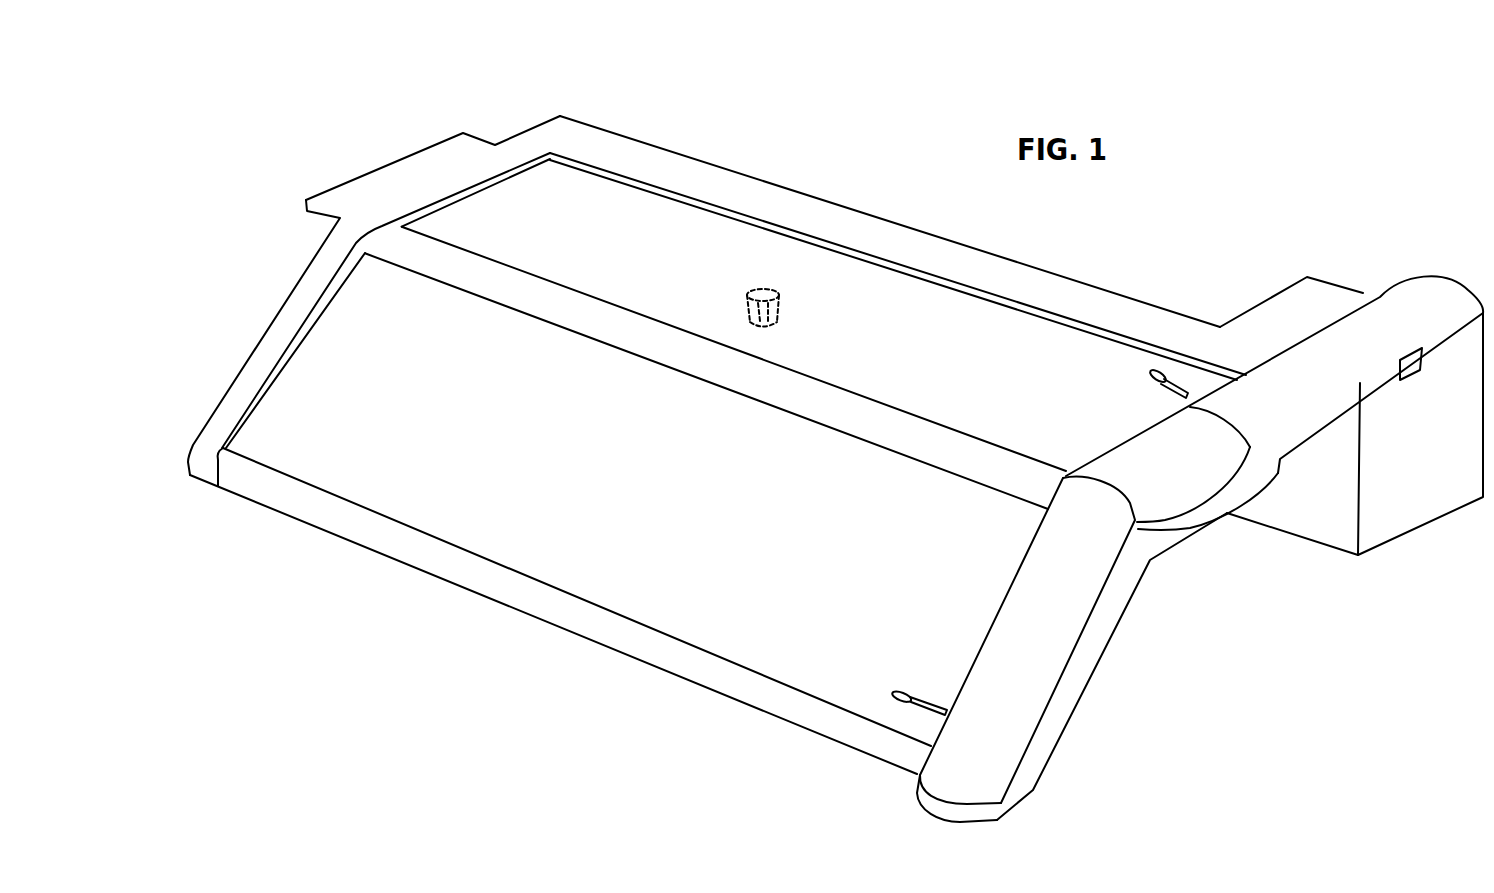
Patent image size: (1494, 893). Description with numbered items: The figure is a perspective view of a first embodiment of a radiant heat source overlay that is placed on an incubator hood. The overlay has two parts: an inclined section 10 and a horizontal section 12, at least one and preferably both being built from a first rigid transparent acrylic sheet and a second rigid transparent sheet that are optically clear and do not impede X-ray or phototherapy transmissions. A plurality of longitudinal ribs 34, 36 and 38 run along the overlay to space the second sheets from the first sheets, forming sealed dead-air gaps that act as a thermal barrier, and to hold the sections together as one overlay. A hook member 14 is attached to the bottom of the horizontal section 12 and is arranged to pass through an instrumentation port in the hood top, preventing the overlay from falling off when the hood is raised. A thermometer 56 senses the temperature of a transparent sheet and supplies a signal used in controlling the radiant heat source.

The inclined section 10 is at (226, 335).
The horizontal section 12 is at (444, 113).
The hook member 14 is at (740, 322).
The longitudinal rib 34 is at (653, 666).
The longitudinal rib 36 is at (883, 450).
The longitudinal rib 38 is at (760, 190).
The thermometer 56 is at (1173, 390).